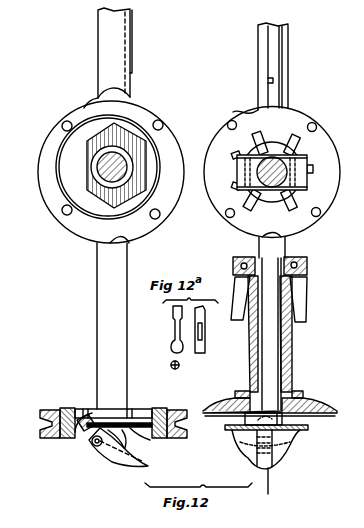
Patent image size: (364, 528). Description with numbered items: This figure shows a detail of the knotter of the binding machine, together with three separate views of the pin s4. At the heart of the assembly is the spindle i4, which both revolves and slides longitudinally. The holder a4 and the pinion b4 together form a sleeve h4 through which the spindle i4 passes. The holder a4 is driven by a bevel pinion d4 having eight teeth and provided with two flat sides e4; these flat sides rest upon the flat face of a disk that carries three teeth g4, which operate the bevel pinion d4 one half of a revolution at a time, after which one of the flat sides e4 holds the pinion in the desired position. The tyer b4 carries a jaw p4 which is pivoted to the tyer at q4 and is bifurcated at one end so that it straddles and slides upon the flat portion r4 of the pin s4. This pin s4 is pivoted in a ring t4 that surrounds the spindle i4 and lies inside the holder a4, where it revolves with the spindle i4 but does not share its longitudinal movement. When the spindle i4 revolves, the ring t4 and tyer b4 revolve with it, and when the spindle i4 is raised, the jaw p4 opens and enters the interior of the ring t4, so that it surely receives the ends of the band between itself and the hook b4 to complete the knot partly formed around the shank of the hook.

In FIG. 12, the holder a4 is at (101, 256).
In FIG. 12, the bolt holes bx is at (112, 165).
In FIG. 12, the tyer b4 is at (108, 167).
In FIG. 12, the spindle i4 is at (108, 167).
In FIG. 12, the ring t4 is at (186, 424).
In FIG. 12, the flat portion r4 is at (78, 432).
In FIG. 12, the pivot q4 is at (96, 446).
In FIG. 12, the jaw p4 is at (128, 455).
In FIG. 12, the sleeve h4 is at (278, 216).
In FIG. 12, the bevel pinion d4 is at (278, 221).
In FIG. 12, the flat sides e4 is at (298, 162).
In FIG. 12, the teeth g4 is at (270, 172).
In FIG. 12A, the pin s4 is at (173, 311).